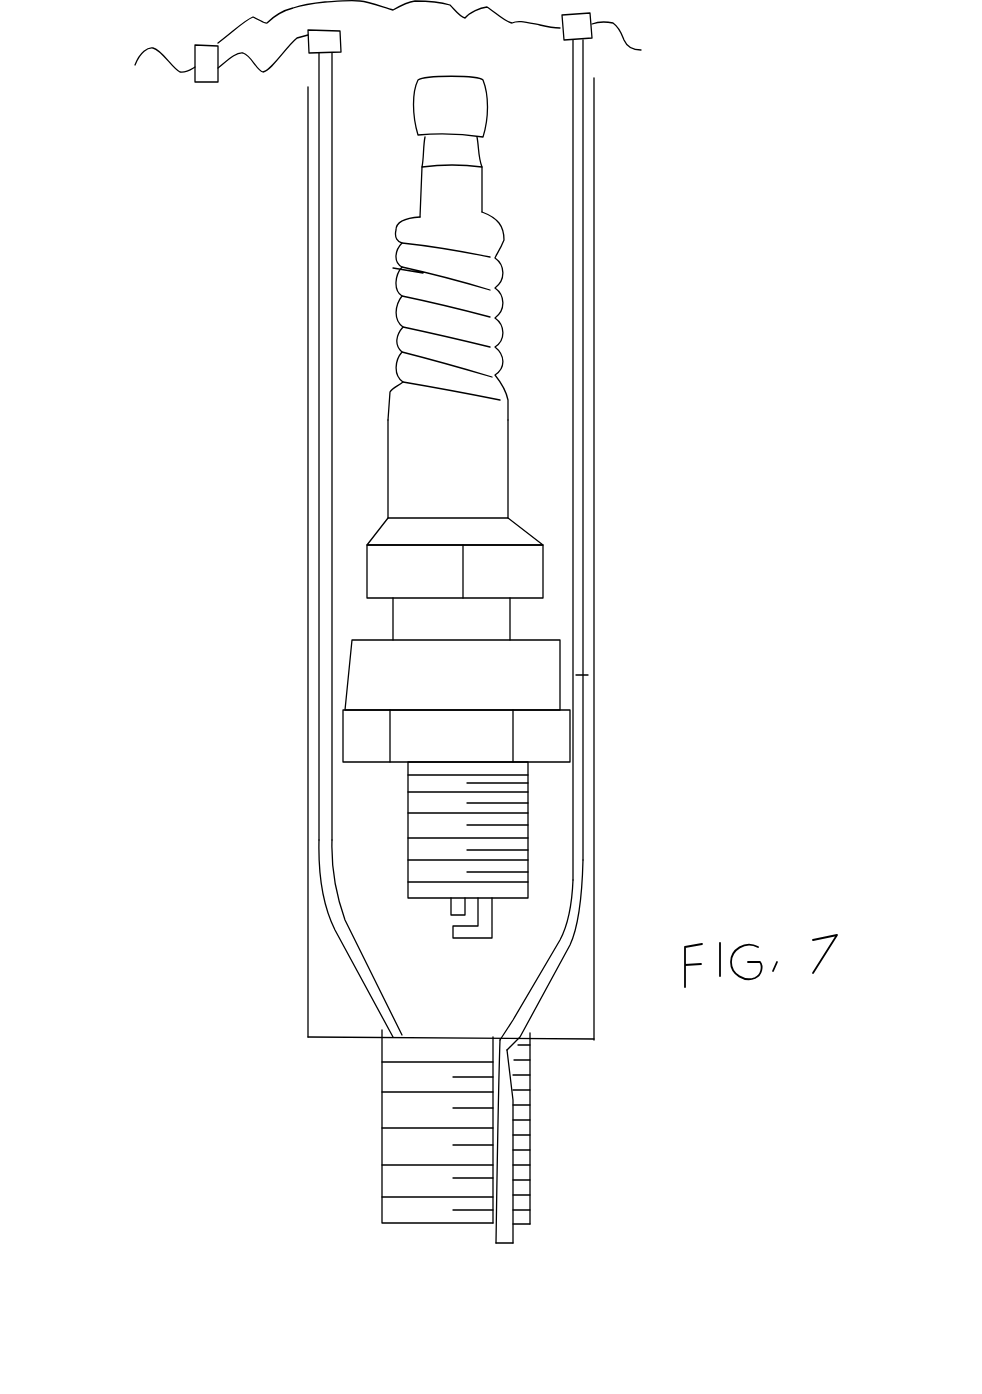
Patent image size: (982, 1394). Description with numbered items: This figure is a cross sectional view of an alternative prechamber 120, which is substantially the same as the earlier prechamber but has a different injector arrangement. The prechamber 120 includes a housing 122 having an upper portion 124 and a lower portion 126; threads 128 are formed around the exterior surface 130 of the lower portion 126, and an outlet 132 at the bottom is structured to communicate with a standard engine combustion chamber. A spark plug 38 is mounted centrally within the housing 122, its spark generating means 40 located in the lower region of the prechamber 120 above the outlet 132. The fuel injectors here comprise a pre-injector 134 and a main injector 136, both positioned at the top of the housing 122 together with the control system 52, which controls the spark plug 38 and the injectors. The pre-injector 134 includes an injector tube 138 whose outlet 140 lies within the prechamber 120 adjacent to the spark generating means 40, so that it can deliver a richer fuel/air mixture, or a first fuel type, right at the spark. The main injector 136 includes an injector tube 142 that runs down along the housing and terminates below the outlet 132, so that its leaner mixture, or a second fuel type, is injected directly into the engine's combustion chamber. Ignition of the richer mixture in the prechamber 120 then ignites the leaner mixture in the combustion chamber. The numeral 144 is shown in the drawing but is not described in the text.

The spark plug 38 is at (460, 482).
The spark generating means 40 is at (452, 930).
The control system 52 is at (339, 59).
The prechamber 120 is at (165, 556).
The housing 122 is at (301, 338).
The upper portion 124 is at (307, 172).
The lower portion 126 is at (382, 1050).
The threads 128 is at (530, 1110).
The exterior surface 130 is at (530, 1072).
The outlet 132 is at (430, 1224).
The pre-injector 134 is at (358, 19).
The main injector 136 is at (632, 45).
The injector tube 138 is at (333, 462).
The outlet 140 is at (398, 1035).
The injector tube 142 is at (571, 380).
The tube end 144 is at (530, 1238).